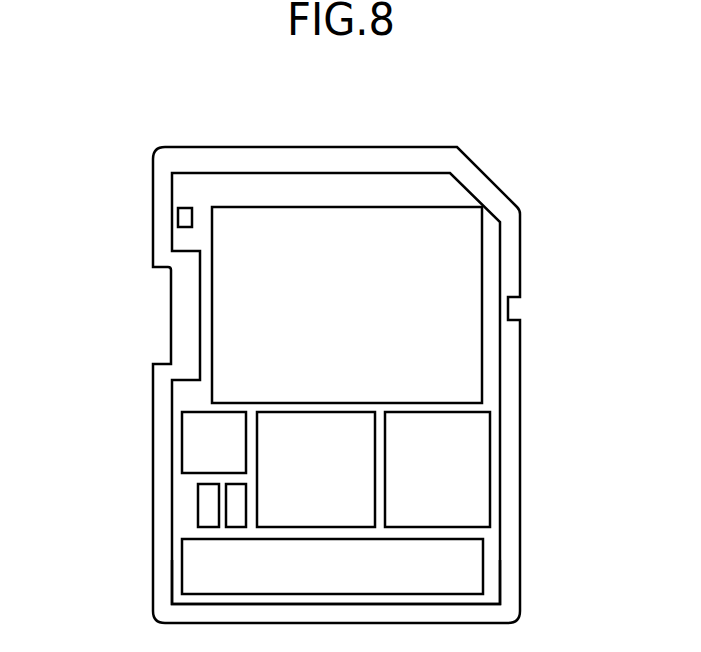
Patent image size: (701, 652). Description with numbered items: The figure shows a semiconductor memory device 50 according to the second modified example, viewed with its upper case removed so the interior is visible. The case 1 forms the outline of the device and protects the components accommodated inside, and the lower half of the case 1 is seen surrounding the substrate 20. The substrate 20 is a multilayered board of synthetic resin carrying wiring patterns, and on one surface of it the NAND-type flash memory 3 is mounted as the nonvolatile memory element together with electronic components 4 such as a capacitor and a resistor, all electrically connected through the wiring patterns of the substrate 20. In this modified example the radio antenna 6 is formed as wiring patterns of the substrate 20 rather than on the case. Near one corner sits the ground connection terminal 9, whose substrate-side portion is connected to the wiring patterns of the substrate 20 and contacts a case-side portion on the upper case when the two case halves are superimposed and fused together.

The semiconductor memory device 50 is at (107, 117).
The case 1 is at (487, 177).
The substrate 20 is at (490, 584).
The NAND-type flash memory 3 is at (467, 262).
The electronic components 4 is at (337, 500).
The radio antenna 6 is at (470, 562).
The ground connection terminal 9 is at (178, 215).